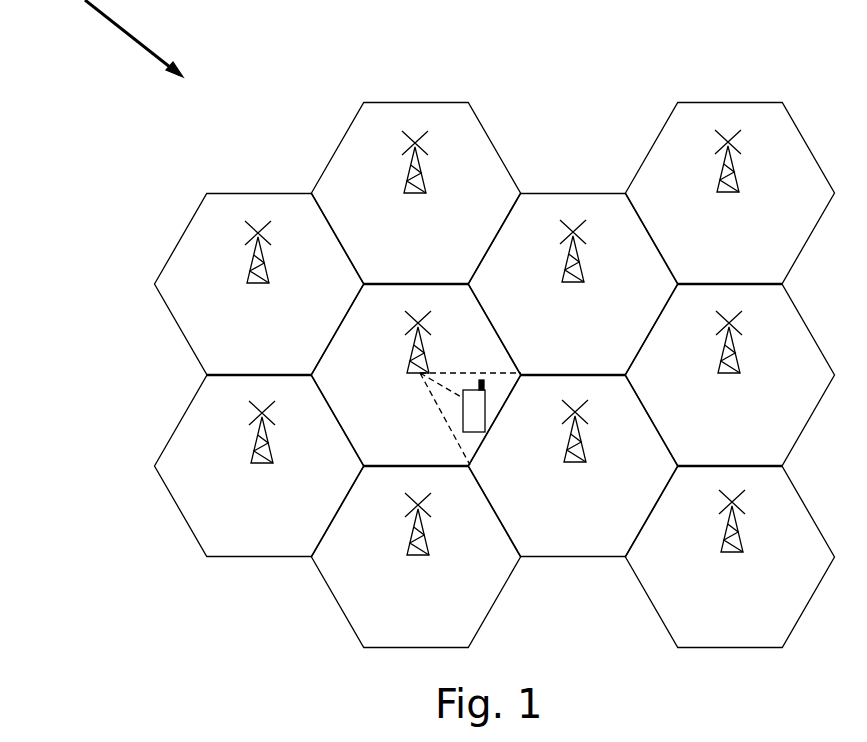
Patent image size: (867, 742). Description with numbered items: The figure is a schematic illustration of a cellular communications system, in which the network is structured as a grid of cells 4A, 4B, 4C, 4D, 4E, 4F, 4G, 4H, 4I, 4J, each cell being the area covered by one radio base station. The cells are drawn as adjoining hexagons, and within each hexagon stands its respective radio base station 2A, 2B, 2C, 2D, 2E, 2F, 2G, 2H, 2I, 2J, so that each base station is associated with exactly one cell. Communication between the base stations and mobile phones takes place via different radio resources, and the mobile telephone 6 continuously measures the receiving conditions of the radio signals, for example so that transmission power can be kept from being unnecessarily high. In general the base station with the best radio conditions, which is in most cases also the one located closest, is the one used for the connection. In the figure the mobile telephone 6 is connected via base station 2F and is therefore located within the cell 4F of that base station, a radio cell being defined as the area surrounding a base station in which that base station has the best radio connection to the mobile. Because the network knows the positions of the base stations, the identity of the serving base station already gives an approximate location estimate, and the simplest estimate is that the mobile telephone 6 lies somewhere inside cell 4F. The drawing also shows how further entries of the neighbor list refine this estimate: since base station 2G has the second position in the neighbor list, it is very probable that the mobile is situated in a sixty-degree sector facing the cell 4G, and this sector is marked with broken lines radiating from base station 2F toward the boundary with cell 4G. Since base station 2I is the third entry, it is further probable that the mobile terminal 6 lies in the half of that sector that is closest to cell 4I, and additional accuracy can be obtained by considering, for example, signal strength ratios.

The radio base station 2A is at (256, 283).
The radio base station 2B is at (420, 188).
The radio base station 2C is at (571, 282).
The radio base station 2D is at (731, 192).
The radio base station 2E is at (272, 456).
The radio base station 2F is at (418, 373).
The radio base station 2G is at (575, 462).
The radio base station 2H is at (730, 373).
The radio base station 2I is at (420, 555).
The radio base station 2J is at (742, 550).
The cell 4A is at (334, 294).
The cell 4B is at (431, 249).
The cell 4C is at (612, 292).
The cell 4D is at (768, 204).
The cell 4E is at (252, 514).
The cell 4F is at (436, 433).
The cell 4G is at (614, 474).
The cell 4H is at (767, 383).
The cell 4I is at (458, 567).
The cell 4J is at (699, 609).
The mobile telephone 6 is at (470, 418).